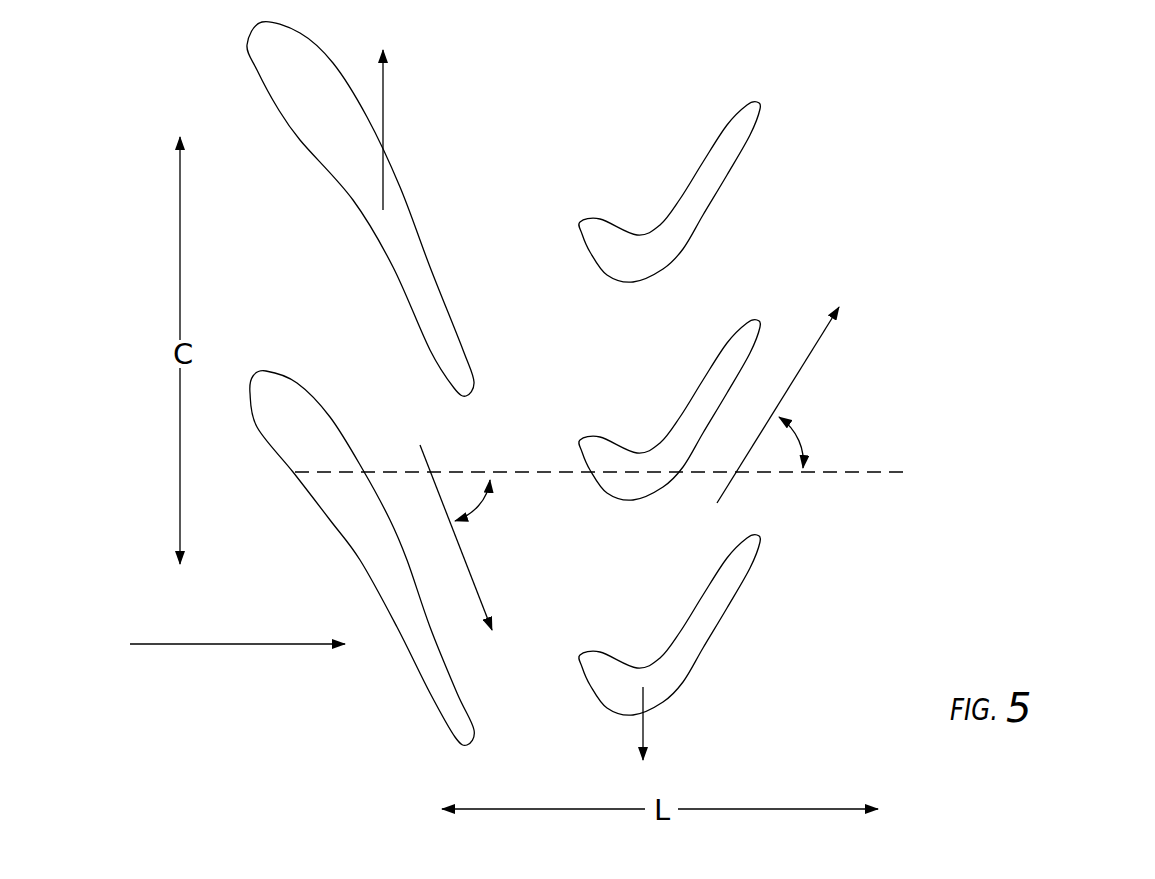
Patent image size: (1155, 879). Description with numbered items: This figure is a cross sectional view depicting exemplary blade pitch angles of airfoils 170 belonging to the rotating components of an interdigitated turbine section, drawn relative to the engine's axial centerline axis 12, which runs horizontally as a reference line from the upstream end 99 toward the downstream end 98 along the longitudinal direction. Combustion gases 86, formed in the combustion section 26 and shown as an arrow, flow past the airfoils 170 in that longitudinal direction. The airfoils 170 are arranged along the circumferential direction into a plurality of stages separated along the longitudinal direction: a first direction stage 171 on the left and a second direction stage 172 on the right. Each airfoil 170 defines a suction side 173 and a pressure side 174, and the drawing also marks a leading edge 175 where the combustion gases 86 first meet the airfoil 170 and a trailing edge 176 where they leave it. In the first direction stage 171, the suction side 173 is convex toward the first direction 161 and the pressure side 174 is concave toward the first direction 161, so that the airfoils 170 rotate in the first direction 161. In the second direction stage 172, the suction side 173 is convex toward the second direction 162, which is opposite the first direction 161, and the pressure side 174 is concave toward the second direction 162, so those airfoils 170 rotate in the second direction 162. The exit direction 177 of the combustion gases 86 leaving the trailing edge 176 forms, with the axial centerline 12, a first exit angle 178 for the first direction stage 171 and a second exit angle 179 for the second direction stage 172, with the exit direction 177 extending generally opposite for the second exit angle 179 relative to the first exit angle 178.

The axial centerline axis 12 is at (897, 471).
The combustion section 26 is at (158, 452).
The combustion gases 86 is at (240, 644).
The downstream end 98 is at (1131, 452).
The upstream end 99 is at (103, 452).
The first direction 161 is at (385, 90).
The second direction 162 is at (644, 728).
The airfoil 170 is at (300, 115).
The first direction stage 171 is at (454, 158).
The second direction stage 172 is at (676, 92).
The suction side 173 is at (432, 247).
The pressure side 174 is at (387, 264).
The leading edge 175 is at (256, 366).
The trailing edge 176 is at (468, 750).
The exit direction 177 is at (478, 570).
The first exit angle 178 is at (478, 504).
The second exit angle 179 is at (800, 441).